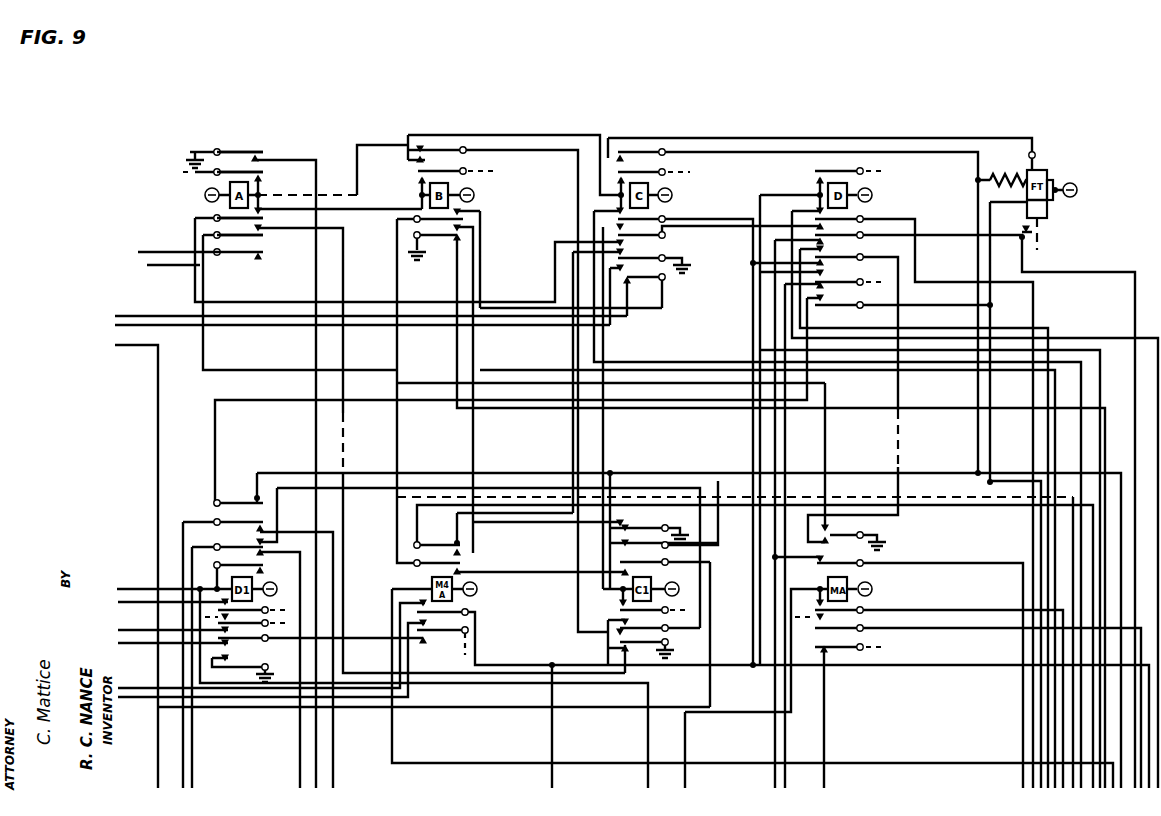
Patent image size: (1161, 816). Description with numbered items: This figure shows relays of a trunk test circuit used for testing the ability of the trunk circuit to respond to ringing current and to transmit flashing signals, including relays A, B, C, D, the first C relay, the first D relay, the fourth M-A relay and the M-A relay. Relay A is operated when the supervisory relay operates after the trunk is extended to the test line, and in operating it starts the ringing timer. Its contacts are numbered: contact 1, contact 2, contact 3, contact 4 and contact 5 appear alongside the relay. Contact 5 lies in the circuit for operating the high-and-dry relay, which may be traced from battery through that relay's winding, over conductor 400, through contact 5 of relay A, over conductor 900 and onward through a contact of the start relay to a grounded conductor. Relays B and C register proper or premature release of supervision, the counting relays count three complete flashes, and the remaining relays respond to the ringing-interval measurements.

The conductor 400 is at (180, 252).
The conductor 900 is at (192, 268).
The contact 1 is at (240, 158).
The relay A contact 2 is at (240, 177).
The contact 3 is at (240, 213).
The contact 4 is at (240, 231).
The contact 5 is at (240, 257).